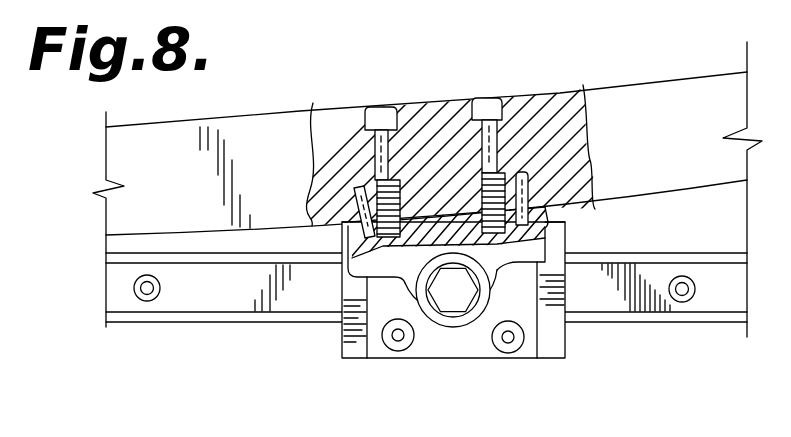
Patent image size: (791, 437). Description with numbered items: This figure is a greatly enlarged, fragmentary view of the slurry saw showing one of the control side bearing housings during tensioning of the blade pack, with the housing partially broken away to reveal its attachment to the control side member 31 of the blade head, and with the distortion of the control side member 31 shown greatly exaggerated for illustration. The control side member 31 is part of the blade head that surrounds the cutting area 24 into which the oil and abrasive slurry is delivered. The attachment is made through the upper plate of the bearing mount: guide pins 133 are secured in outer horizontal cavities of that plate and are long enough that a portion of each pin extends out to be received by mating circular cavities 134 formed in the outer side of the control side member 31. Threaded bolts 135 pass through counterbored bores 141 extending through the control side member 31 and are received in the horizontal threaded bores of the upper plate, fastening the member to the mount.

The control side member 31 is at (245, 128).
The cutting area 24 is at (246, 303).
The counterbored bore 141 is at (378, 112).
The threaded bolt 135 is at (530, 98).
The guide pin 133 is at (506, 156).
The mating circular cavity 134 is at (531, 188).